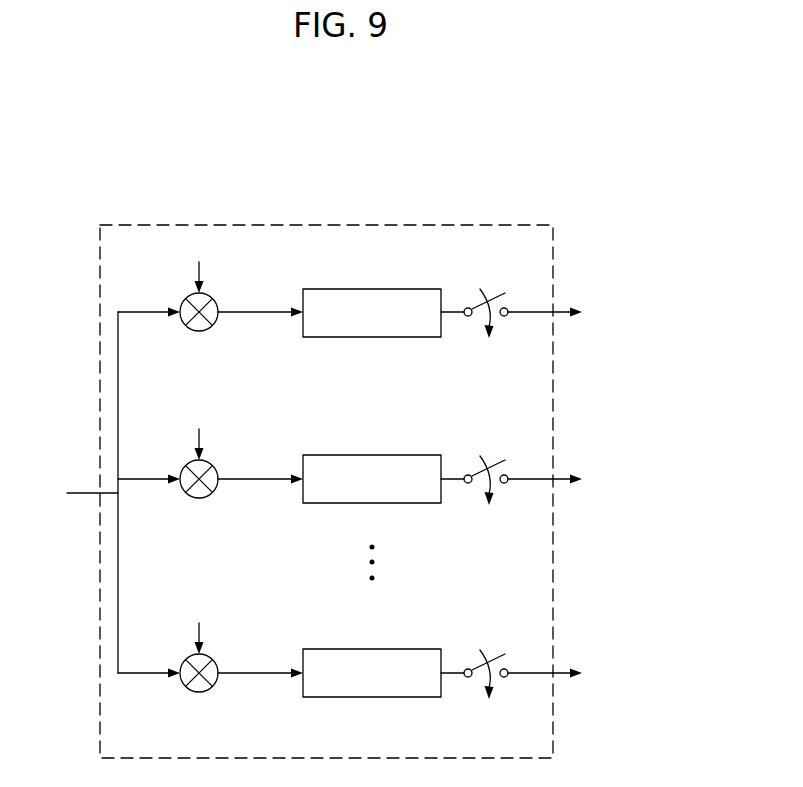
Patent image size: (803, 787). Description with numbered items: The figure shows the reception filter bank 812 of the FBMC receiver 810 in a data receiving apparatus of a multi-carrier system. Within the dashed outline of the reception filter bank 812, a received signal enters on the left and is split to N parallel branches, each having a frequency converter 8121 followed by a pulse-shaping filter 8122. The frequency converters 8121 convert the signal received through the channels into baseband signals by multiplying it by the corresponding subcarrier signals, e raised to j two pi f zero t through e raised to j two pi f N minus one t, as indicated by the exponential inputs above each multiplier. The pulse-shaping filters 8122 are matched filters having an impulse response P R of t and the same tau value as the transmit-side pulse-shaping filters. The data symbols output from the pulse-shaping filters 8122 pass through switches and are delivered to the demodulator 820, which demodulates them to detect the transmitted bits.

The FBMC receiver 810 is at (128, 193).
The reception filter bank 812 is at (432, 225).
The frequency converters 8121 is at (198, 332).
The pulse-shaping filters 8122 is at (413, 289).
The demodulator 820 is at (632, 327).